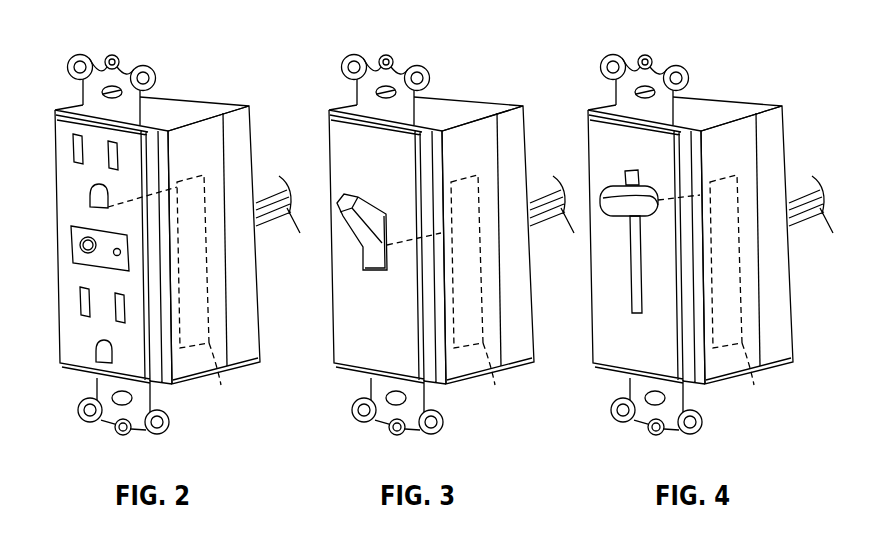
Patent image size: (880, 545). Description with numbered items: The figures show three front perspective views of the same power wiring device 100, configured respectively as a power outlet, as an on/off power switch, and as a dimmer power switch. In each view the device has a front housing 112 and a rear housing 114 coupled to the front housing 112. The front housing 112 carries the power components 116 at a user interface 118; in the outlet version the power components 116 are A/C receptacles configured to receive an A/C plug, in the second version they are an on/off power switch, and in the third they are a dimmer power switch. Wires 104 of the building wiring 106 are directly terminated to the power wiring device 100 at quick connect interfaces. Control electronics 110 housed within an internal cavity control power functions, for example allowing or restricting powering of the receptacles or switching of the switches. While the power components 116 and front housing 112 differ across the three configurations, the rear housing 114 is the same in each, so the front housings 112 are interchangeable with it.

In FIG. 2, the power wiring device 100 is at (162, 43).
In FIG. 3, the power wiring device 100 is at (475, 53).
In FIG. 4, the power wiring device 100 is at (743, 53).
In FIG. 2, the wires 104 is at (260, 232).
In FIG. 3, the wires 104 is at (535, 233).
In FIG. 4, the wires 104 is at (797, 195).
In FIG. 2, the building wiring 106 is at (272, 232).
In FIG. 3, the building wiring 106 is at (553, 230).
In FIG. 4, the building wiring 106 is at (798, 228).
In FIG. 2, the control electronics 110 is at (173, 292).
In FIG. 3, the control electronics 110 is at (458, 291).
In FIG. 4, the control electronics 110 is at (722, 290).
In FIG. 2, the front housing 112 is at (168, 108).
In FIG. 3, the front housing 112 is at (442, 108).
In FIG. 4, the front housing 112 is at (700, 108).
In FIG. 2, the rear housing 114 is at (231, 103).
In FIG. 3, the rear housing 114 is at (497, 104).
In FIG. 4, the rear housing 114 is at (760, 104).
In FIG. 2, the power components 116 is at (92, 166).
In FIG. 3, the power components 116 is at (352, 259).
In FIG. 4, the power components 116 is at (588, 197).
In FIG. 2, the user interface 118 is at (80, 200).
In FIG. 3, the user interface 118 is at (338, 228).
In FIG. 4, the user interface 118 is at (625, 292).